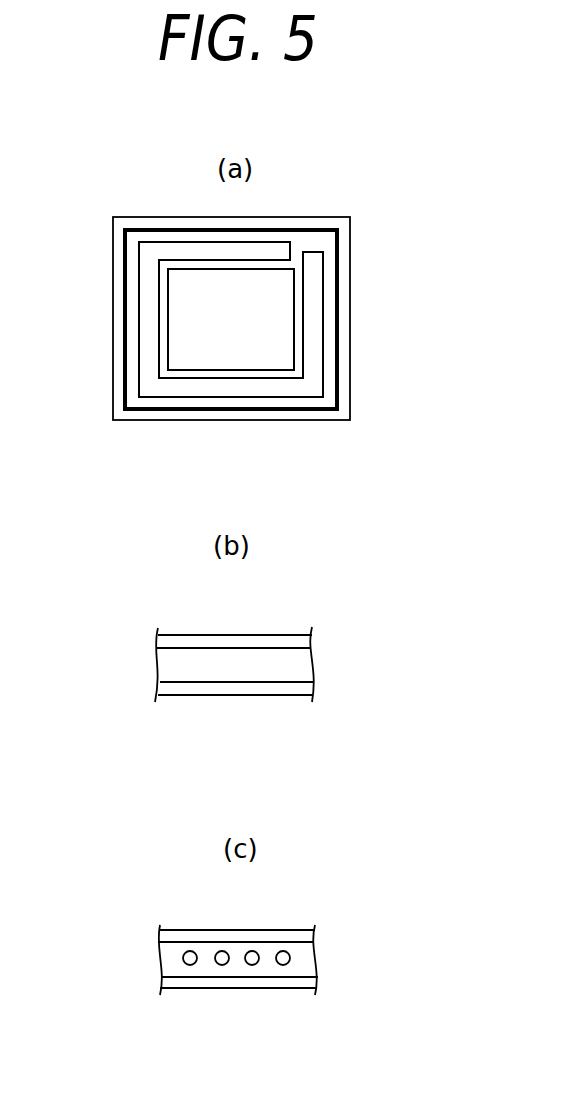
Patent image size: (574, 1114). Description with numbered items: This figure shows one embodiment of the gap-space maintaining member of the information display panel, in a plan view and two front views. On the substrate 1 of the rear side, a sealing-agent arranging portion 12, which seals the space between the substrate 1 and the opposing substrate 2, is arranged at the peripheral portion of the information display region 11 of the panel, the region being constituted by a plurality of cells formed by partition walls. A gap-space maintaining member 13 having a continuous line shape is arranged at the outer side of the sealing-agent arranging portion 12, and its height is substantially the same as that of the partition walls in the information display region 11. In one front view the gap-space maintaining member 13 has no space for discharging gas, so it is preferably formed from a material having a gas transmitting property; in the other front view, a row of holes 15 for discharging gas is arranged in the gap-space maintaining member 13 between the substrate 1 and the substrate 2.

The substrate 1 is at (287, 420).
The substrate 2 is at (242, 643).
The information display region 11 is at (277, 288).
The sealing-agent arranging portion 12 is at (313, 308).
The gap-space maintaining member 13 is at (338, 362).
The hole for discharging gas 15 is at (192, 965).